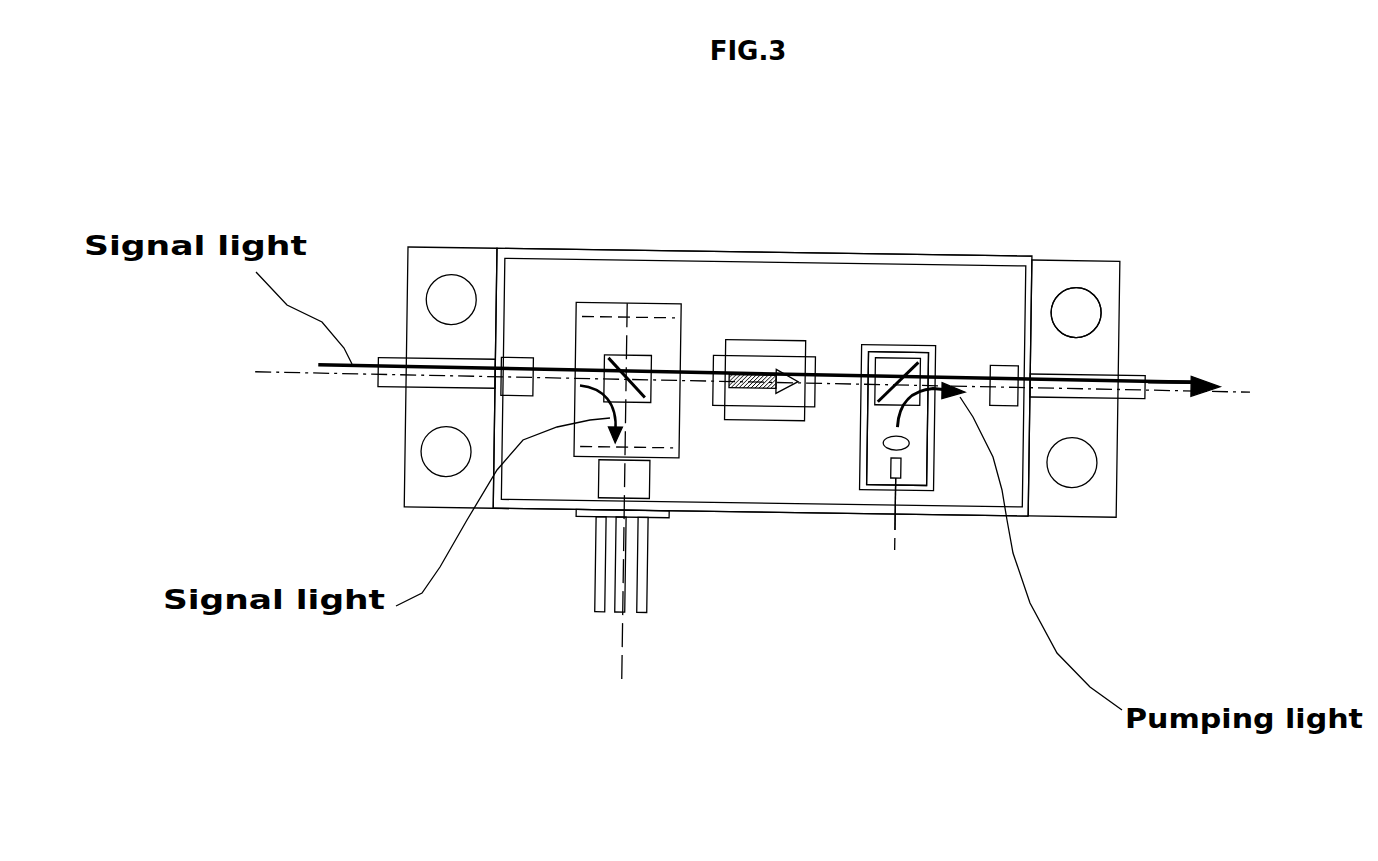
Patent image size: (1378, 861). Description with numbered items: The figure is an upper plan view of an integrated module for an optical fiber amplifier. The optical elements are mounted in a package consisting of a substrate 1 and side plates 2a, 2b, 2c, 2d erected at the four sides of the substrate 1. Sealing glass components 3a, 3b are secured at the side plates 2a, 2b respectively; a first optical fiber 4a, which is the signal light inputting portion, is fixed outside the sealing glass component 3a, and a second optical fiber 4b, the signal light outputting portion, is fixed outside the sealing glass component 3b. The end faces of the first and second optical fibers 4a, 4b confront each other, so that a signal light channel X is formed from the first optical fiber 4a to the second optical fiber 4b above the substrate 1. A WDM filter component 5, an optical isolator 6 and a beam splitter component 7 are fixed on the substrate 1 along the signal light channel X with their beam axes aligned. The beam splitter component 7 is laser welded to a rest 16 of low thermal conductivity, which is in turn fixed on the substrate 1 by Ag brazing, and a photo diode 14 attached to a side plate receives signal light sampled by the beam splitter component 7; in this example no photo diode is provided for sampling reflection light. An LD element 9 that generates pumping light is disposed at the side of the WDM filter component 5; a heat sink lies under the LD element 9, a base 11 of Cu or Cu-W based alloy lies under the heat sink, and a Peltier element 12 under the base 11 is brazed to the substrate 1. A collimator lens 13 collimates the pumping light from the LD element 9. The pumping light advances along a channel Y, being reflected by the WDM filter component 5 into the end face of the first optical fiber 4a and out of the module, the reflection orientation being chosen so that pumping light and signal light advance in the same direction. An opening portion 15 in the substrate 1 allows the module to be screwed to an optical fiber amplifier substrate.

The substrate 1 is at (762, 329).
The side plate 2a is at (425, 324).
The side plate 2b is at (1094, 354).
The side plate 2c is at (768, 201).
The side plate 2d is at (760, 575).
The sealing glass component 3a is at (407, 292).
The sealing glass component 3b is at (1053, 483).
The first optical fiber 4a is at (390, 452).
The second optical fiber 4b is at (1126, 472).
The WDM filter component 5 is at (932, 321).
The optical isolator 6 is at (741, 272).
The beam splitter component 7 is at (557, 247).
The LD element 9 is at (916, 533).
The base 11 is at (877, 600).
The Peltier element 12 is at (805, 551).
The collimator lens 13 is at (843, 555).
The photo diode 14 is at (536, 567).
The opening portion 15 is at (1164, 282).
The rest 16 is at (615, 386).
The signal light channel X is at (1196, 339).
The channel Y is at (953, 558).